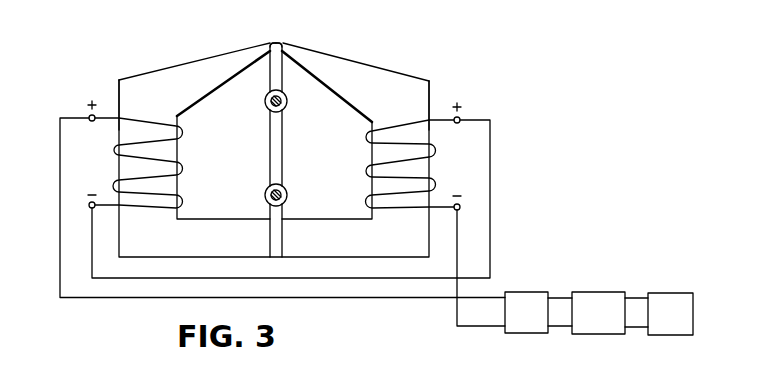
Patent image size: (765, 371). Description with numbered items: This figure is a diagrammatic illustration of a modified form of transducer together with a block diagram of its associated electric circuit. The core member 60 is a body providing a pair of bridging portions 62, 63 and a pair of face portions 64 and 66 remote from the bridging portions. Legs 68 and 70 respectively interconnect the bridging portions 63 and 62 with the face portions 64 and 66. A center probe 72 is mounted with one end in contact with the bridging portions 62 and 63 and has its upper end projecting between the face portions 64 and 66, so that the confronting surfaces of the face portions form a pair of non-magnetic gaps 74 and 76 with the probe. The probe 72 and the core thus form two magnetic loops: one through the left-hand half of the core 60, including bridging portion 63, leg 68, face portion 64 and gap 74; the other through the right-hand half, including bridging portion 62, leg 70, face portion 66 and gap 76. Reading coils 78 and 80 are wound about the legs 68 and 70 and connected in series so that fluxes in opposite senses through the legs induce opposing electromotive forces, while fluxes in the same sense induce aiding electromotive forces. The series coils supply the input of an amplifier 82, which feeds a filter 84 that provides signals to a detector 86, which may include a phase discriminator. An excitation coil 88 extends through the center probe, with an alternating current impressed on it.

The core member 60 is at (135, 60).
The bridging portion 62 is at (346, 226).
The bridging portion 63 is at (230, 227).
The face portion 64 is at (181, 75).
The face portion 66 is at (365, 78).
The leg 68 is at (128, 88).
The leg 70 is at (420, 97).
The center probe 72 is at (282, 140).
The non-magnetic gap 74 is at (269, 43).
The non-magnetic gap 76 is at (283, 43).
The reading coil 78 is at (112, 152).
The reading coil 80 is at (437, 152).
The amplifier 82 is at (534, 292).
The filter 84 is at (598, 292).
The detector 86 is at (686, 299).
The excitation coil 88 is at (268, 188).